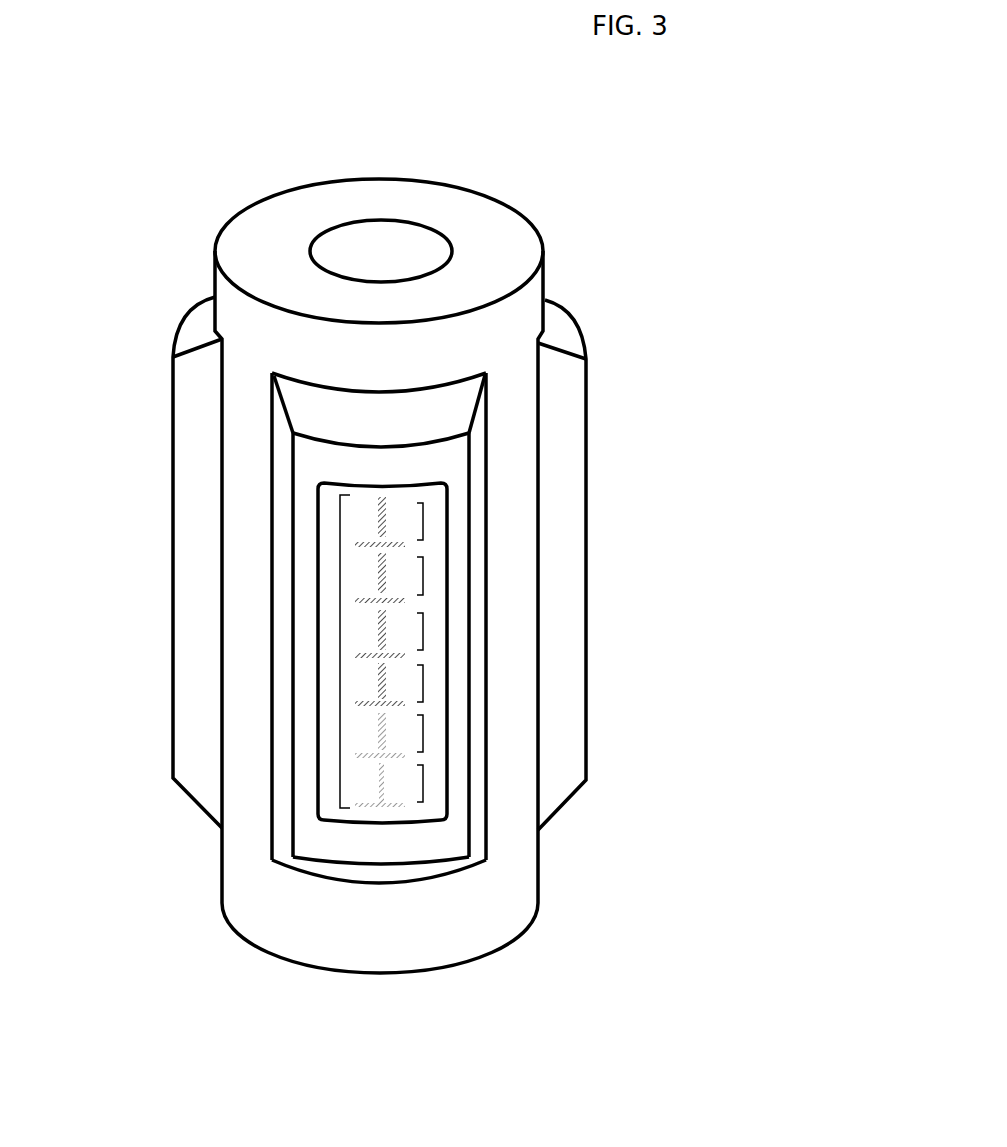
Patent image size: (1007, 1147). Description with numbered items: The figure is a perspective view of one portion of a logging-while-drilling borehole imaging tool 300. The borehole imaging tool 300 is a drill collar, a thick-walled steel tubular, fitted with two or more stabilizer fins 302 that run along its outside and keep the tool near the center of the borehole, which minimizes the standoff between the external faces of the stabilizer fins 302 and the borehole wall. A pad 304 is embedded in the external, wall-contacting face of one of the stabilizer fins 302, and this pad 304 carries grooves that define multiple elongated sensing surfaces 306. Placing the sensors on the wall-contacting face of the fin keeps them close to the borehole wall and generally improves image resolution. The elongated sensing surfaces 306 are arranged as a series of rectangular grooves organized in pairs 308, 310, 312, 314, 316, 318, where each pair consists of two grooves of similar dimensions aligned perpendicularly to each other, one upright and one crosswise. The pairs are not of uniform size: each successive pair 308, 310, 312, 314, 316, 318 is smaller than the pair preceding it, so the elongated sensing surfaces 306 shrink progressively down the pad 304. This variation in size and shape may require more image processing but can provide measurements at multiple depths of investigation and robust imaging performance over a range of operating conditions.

The LWD borehole imaging tool 300 is at (177, 227).
The stabilizer fins 302 is at (195, 335).
The pad 304 is at (318, 498).
The elongated sensing surfaces 306 is at (338, 653).
The first pair of grooves 308 is at (423, 522).
The second pair of grooves 310 is at (423, 577).
The third pair of grooves 312 is at (423, 633).
The fourth pair of grooves 314 is at (423, 683).
The fifth pair of grooves 316 is at (423, 733).
The sixth pair of grooves 318 is at (423, 783).